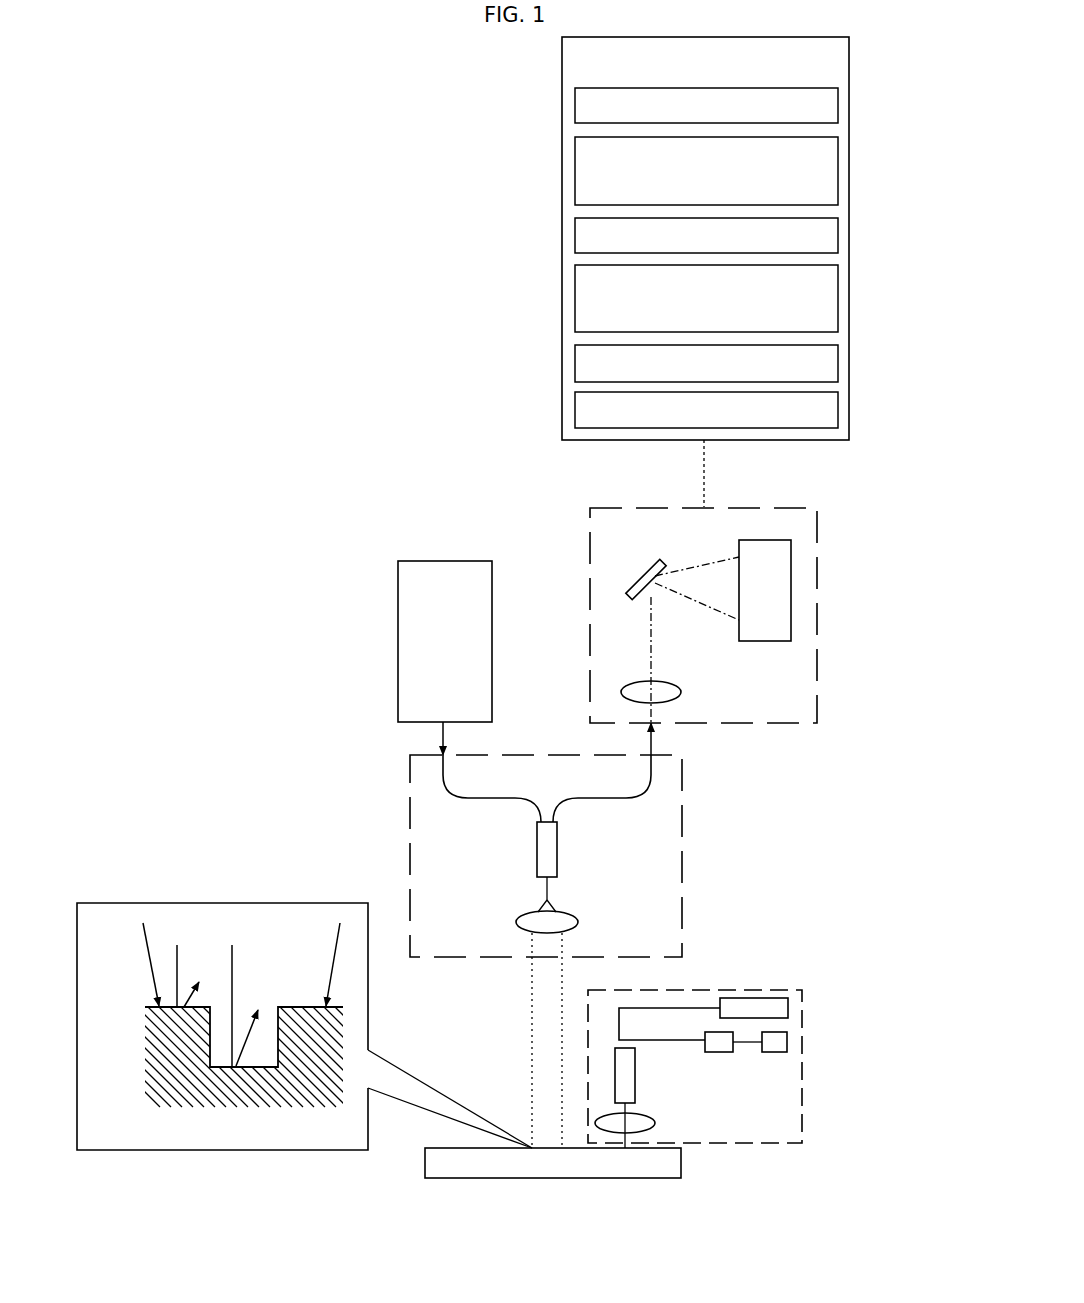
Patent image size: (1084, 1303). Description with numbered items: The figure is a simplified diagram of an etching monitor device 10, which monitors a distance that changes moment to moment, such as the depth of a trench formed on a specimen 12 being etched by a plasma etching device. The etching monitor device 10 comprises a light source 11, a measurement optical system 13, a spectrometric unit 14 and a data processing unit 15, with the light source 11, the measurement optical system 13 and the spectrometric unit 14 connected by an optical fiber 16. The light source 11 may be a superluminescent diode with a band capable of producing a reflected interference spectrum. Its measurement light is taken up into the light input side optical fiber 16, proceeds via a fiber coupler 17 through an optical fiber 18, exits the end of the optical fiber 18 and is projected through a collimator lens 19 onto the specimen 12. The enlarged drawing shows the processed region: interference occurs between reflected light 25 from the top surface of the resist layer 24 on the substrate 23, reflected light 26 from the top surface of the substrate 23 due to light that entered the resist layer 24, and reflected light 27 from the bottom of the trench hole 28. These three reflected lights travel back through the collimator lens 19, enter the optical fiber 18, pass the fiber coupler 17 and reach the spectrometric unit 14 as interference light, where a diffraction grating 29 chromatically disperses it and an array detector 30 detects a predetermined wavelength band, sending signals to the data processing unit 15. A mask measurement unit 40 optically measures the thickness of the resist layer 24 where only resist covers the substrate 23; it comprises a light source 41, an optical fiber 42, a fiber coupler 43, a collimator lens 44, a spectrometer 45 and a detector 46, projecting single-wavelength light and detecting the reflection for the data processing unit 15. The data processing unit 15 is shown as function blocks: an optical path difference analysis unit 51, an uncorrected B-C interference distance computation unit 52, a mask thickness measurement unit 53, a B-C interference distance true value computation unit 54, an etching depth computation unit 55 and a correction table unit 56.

The etching monitor device 10 is at (296, 390).
The light source 11 is at (443, 561).
The specimen 12 is at (683, 1162).
The measurement optical system 13 is at (684, 857).
The spectrometric unit 14 is at (820, 670).
The data processing unit 15 is at (562, 226).
The optical fiber 16 is at (478, 799).
The fiber coupler 17 is at (558, 846).
The optical fiber 18 is at (542, 891).
The collimator lens 19 is at (579, 921).
The substrate 23 is at (156, 1083).
The resist layer 24 is at (150, 1005).
The reflected light 25 is at (186, 1003).
The reflected light 26 is at (170, 1014).
The reflected light 27 is at (238, 1055).
The trench hole 28 is at (238, 1090).
The diffraction grating 29 is at (645, 573).
The array detector 30 is at (765, 644).
The mask measurement unit 40 is at (738, 990).
The light source 41 is at (766, 1010).
The optical fiber 42 is at (678, 1007).
The fiber coupler 43 is at (636, 1080).
The collimator lens 44 is at (649, 1122).
The spectrometer 45 is at (722, 1047).
The detector 46 is at (790, 1042).
The optical path difference analysis unit 51 is at (838, 108).
The uncorrected B-C interference distance computation unit 52 is at (838, 172).
The mask thickness measurement unit 53 is at (838, 235).
The B-C interference distance true value computation unit 54 is at (838, 300).
The etching depth computation unit 55 is at (838, 365).
The correction table unit 56 is at (838, 410).